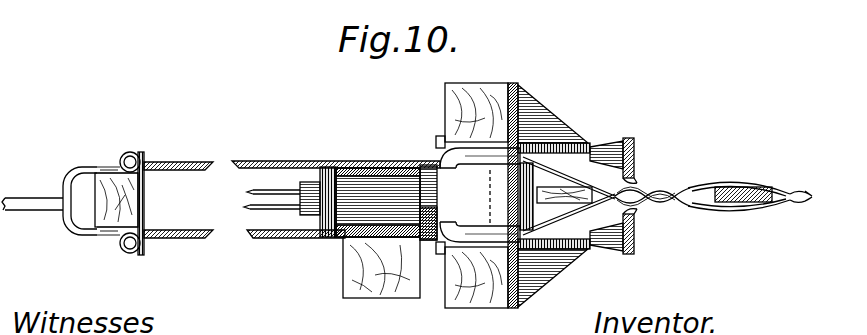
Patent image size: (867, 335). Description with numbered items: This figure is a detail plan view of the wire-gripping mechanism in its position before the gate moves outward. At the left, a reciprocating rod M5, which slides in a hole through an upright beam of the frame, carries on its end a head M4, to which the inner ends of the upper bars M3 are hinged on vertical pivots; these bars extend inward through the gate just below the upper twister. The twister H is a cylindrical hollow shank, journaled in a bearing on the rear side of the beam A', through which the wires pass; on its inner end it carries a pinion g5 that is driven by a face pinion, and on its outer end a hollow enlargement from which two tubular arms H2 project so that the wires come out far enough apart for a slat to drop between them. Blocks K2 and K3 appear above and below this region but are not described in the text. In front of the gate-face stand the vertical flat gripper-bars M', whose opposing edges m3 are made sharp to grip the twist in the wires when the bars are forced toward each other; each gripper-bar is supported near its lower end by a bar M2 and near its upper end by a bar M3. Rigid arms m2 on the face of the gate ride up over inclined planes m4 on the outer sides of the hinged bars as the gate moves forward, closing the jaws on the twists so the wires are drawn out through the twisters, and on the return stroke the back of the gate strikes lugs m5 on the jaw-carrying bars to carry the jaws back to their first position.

The reciprocating rod M5 is at (42, 191).
The head M4 is at (108, 203).
The upper bars M3 is at (289, 155).
The pinion g5 is at (328, 166).
The twister H is at (361, 176).
The beam A' is at (365, 267).
The lugs m5 is at (438, 150).
The tubular arms H2 is at (489, 198).
The upper wooden block K2 is at (497, 83).
The lower wooden block K3 is at (497, 308).
The rigid arms m2 is at (582, 146).
The inclined planes m4 is at (617, 142).
The gripper-bars M' is at (644, 196).
The opposing edges m3 is at (638, 181).
The lower bars M2 is at (534, 209).